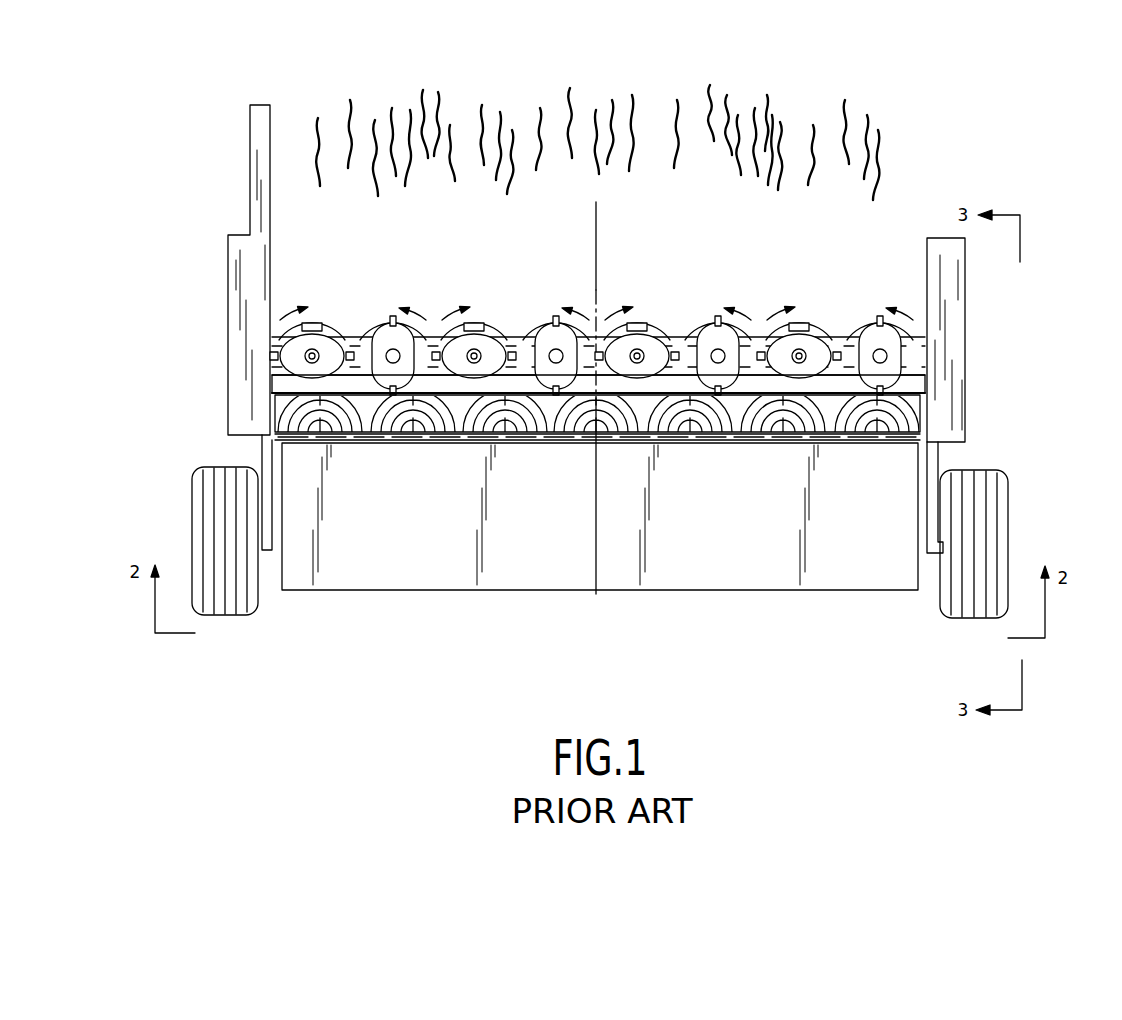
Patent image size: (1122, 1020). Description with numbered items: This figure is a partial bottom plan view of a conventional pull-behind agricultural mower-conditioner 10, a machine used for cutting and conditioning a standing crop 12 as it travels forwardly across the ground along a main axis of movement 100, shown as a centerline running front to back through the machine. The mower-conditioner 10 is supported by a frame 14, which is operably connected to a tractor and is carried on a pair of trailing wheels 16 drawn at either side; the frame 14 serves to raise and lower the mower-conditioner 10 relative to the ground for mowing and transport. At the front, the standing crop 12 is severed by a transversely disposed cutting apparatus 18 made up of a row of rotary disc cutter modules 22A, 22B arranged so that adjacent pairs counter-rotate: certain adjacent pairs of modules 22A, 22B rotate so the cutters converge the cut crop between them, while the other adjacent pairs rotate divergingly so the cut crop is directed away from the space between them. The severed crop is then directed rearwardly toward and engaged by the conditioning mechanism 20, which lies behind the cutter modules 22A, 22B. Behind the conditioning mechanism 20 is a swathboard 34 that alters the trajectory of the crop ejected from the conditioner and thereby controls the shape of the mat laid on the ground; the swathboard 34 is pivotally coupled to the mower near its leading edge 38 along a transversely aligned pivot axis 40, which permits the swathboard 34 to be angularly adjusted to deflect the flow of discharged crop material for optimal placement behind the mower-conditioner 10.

The mower-conditioner 10 is at (198, 243).
The standing crop 12 is at (902, 132).
The frame 14 is at (262, 162).
The trailing wheels 16 is at (197, 497).
The cutting apparatus 18 is at (920, 215).
The conditioning mechanism 20 is at (280, 413).
The rotary disc cutter module 22A is at (314, 323).
The rotary disc cutter module 22B is at (396, 316).
The swathboard 34 is at (433, 565).
The leading edge 38 is at (916, 428).
The pivot axis 40 is at (280, 438).
The main axis of movement 100 is at (598, 221).